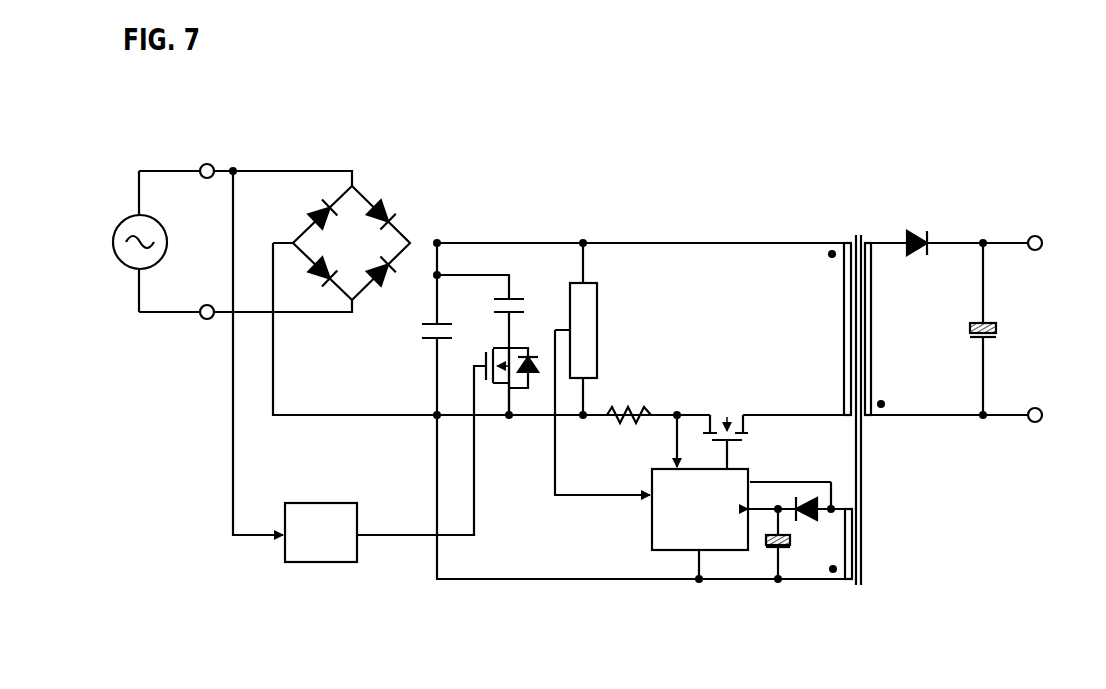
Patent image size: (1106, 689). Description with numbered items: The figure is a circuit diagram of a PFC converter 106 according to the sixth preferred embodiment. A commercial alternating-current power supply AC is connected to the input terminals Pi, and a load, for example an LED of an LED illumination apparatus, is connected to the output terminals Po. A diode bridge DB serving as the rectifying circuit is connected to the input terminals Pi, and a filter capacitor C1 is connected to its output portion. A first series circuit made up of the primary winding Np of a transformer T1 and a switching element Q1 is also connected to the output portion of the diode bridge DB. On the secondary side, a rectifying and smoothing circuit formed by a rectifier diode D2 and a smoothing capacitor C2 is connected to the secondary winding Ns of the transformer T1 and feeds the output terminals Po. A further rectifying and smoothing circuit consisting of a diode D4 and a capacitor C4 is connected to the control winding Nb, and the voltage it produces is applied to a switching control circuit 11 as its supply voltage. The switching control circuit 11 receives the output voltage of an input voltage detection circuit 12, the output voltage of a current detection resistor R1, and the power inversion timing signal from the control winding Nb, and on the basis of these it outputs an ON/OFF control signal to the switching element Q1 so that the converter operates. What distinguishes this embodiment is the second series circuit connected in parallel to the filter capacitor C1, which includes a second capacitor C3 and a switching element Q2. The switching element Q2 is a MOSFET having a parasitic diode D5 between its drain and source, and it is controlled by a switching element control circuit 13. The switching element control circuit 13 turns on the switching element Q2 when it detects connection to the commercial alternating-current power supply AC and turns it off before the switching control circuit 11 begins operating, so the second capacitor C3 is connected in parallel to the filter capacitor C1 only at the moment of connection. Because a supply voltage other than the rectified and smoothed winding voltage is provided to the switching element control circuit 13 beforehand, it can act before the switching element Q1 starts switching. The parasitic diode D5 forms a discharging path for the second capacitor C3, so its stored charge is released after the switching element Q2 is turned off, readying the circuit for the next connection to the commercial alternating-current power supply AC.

The PFC converter 106 is at (1079, 142).
The input terminals Pi is at (203, 165).
The commercial alternating-current power supply AC is at (132, 233).
The diode bridge DB is at (351, 229).
The filter capacitor C1 is at (423, 329).
The second capacitor C3 is at (521, 293).
The switching element Q2 is at (489, 368).
The parasitic diode D5 is at (542, 357).
The input voltage detection circuit 12 is at (599, 328).
The current detection resistor R1 is at (629, 402).
The switching element Q1 is at (725, 427).
The switching control circuit 11 is at (652, 469).
The diode D4 is at (806, 496).
The capacitor C4 is at (768, 554).
The transformer T1 is at (849, 224).
The primary winding Np is at (831, 329).
The secondary winding Ns is at (883, 329).
The control winding Nb is at (833, 544).
The rectifier diode D2 is at (921, 232).
The smoothing capacitor C2 is at (1001, 331).
The output terminals Po is at (1040, 236).
The switching element control circuit 13 is at (285, 503).